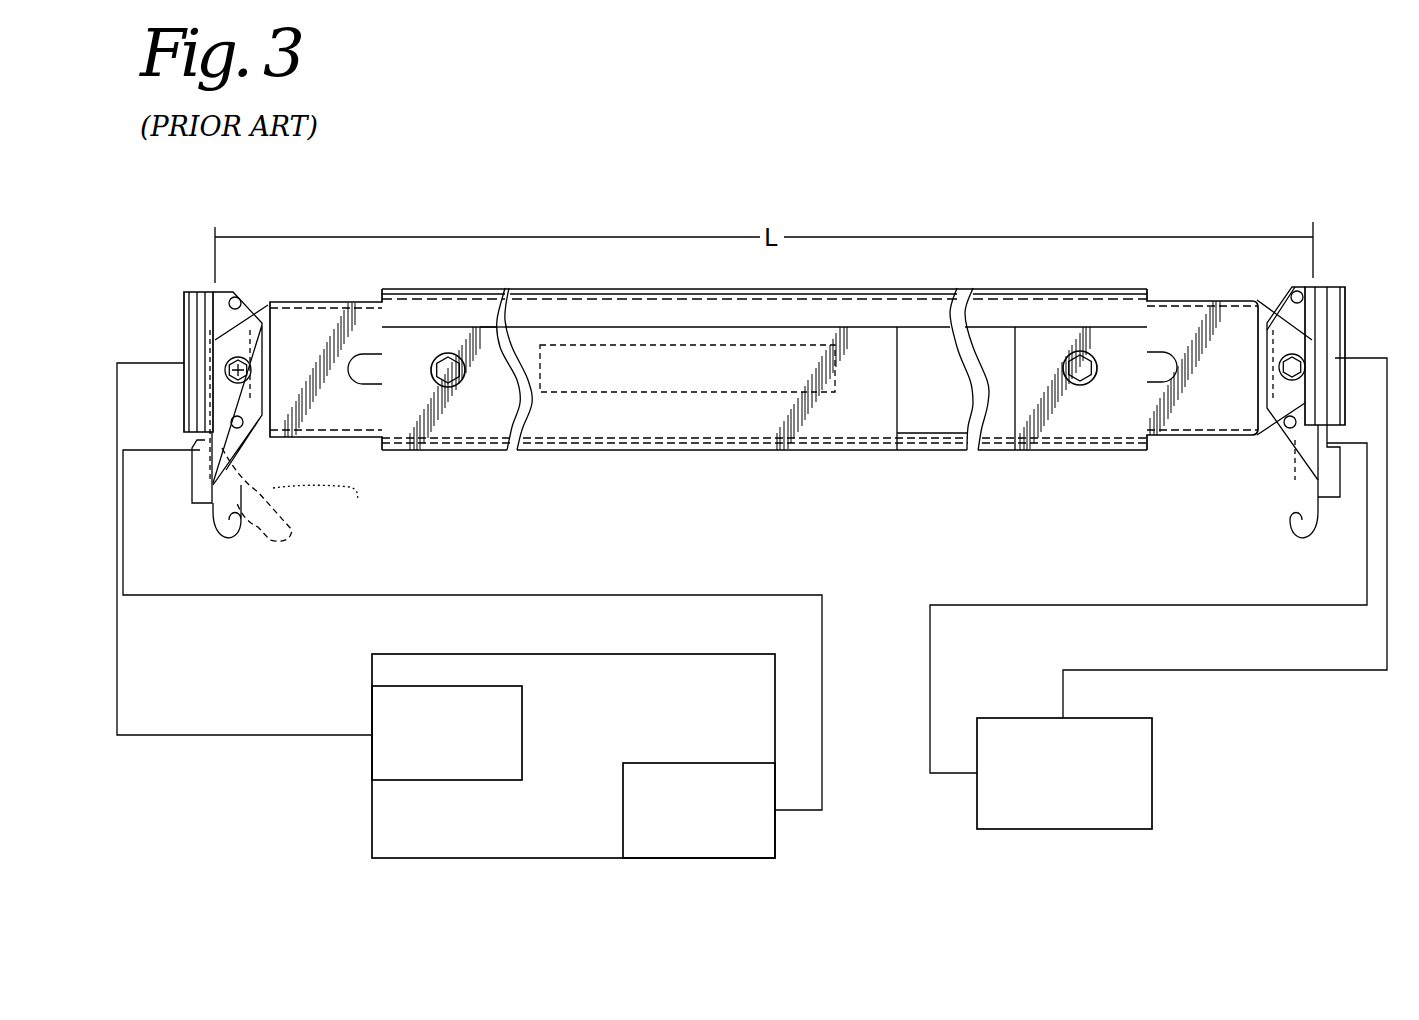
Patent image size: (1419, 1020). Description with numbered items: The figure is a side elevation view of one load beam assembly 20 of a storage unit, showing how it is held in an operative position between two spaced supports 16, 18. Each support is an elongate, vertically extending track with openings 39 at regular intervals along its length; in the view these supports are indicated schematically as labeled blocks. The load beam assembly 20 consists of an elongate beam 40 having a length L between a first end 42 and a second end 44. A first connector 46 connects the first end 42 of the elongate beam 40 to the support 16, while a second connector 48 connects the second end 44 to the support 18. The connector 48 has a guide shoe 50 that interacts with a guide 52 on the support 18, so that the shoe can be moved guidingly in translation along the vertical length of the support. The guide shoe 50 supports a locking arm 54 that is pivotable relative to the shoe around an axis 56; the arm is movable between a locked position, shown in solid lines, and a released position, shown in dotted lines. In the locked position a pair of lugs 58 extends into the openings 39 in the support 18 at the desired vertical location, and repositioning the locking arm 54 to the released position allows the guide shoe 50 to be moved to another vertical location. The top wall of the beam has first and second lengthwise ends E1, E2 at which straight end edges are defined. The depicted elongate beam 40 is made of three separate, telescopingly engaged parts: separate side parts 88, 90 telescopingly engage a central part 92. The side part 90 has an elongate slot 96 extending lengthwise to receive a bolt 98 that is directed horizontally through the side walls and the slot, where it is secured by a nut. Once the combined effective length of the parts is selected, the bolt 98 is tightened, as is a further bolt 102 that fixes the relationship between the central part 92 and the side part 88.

The support 16 is at (1051, 813).
The support 18 is at (676, 738).
The load beam assembly 20 is at (876, 258).
The openings 39 is at (676, 842).
The elongate beam 40 is at (670, 305).
The first end 42 is at (1263, 435).
The second end 44 is at (243, 295).
The first connector 46 is at (1298, 270).
The second connector 48 is at (205, 264).
The guide shoe 50 is at (198, 323).
The guide 52 is at (431, 766).
The locking arm 54 is at (238, 528).
The axis 56 is at (225, 330).
The lugs 58 is at (190, 452).
The side part 88 is at (1172, 325).
The side part 90 is at (293, 347).
The central part 92 is at (868, 373).
The elongate slot 96 is at (448, 370).
The bolt 98 is at (490, 330).
The bolt 102 is at (1080, 368).
The first lengthwise end E1 is at (1147, 290).
The second lengthwise end E2 is at (352, 378).